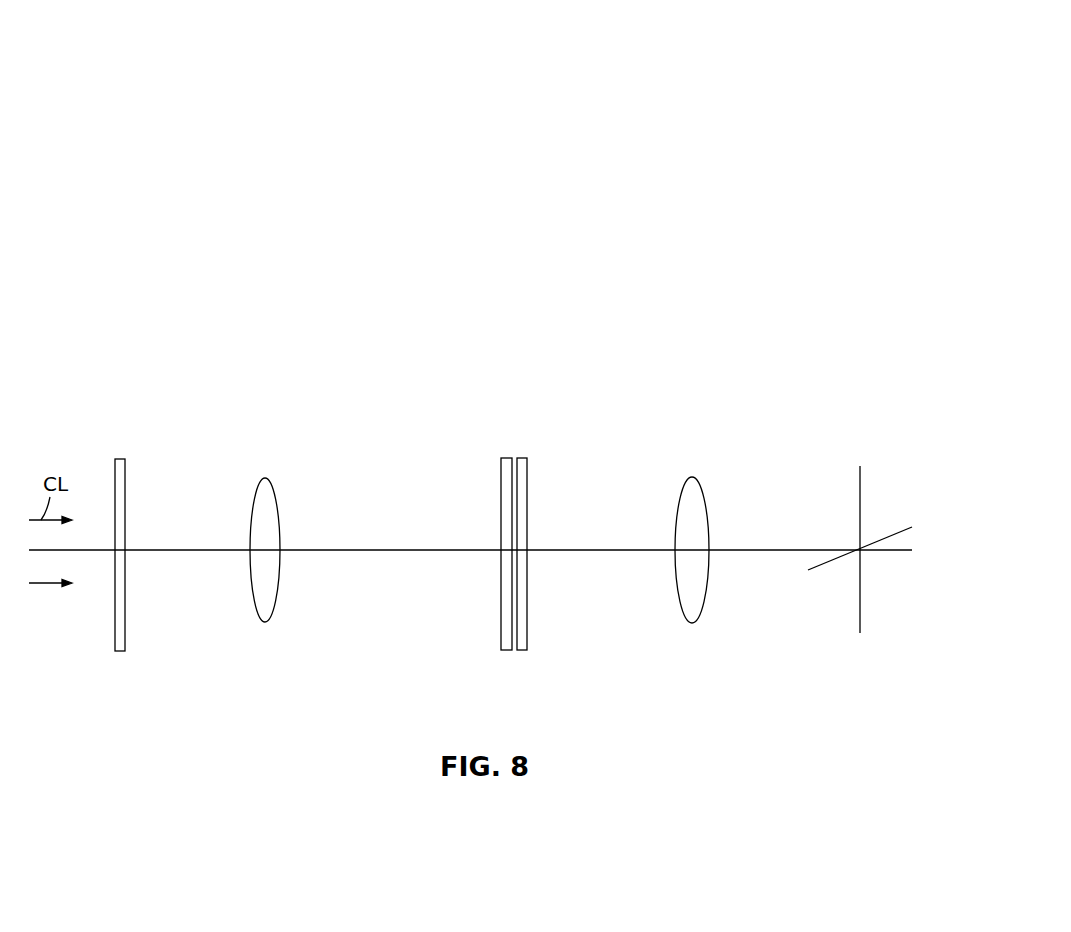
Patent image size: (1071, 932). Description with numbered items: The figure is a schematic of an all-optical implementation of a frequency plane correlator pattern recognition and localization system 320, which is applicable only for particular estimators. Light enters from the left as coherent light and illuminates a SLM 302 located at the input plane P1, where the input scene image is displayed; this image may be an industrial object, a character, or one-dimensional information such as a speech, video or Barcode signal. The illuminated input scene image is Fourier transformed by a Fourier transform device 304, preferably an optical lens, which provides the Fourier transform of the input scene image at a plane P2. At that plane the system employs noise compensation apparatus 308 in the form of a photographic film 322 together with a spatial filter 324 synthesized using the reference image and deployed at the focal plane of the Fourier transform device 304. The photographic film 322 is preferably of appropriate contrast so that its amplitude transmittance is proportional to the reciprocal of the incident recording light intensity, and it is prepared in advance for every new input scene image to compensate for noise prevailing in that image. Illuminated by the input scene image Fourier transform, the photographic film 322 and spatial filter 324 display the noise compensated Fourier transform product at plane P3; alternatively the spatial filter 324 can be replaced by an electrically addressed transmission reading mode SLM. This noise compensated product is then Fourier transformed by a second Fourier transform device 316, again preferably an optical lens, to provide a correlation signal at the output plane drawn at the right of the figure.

The FPC pattern recognition and localization system 320 is at (699, 62).
The SLM 302 is at (120, 638).
The Fourier transform device 304 is at (263, 603).
The noise compensation apparatus 308 is at (517, 521).
The photographic film 322 is at (503, 456).
The spatial filter 324 is at (525, 456).
The Fourier transform device 316 is at (692, 612).
The input plane P1 is at (122, 470).
The Fourier transform plane P2 is at (502, 505).
The noise compensated product plane P3 is at (525, 505).